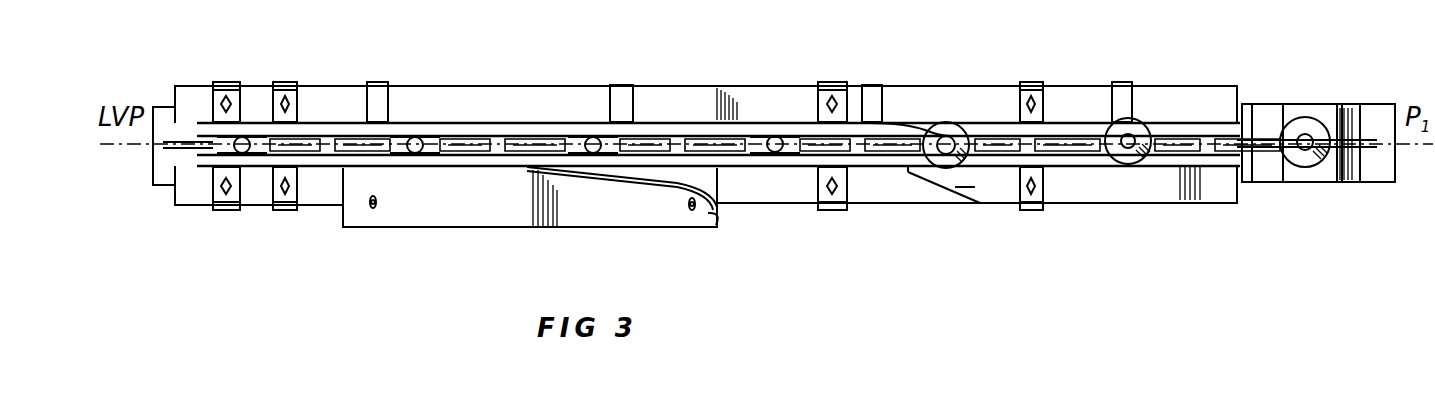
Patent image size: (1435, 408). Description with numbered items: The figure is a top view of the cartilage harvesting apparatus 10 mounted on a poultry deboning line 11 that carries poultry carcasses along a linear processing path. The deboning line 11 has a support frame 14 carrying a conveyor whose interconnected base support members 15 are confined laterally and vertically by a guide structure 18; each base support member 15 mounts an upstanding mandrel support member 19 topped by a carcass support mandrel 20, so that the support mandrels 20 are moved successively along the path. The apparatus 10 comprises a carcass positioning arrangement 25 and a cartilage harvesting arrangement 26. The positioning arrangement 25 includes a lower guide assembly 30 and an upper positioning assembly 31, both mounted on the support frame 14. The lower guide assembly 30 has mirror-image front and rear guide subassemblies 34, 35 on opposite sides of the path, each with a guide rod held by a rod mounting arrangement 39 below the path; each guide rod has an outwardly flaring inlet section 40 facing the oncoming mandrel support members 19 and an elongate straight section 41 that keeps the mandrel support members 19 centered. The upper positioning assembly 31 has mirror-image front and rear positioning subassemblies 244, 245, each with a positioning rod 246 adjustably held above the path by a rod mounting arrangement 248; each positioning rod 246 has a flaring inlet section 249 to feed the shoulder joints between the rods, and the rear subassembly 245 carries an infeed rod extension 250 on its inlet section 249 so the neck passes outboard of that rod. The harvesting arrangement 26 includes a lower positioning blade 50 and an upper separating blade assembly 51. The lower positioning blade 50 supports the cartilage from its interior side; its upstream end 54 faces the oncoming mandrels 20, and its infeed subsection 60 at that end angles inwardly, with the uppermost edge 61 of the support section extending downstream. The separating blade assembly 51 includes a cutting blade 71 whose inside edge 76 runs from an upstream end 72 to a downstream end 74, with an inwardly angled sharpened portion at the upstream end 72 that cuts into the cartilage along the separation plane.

The cartilage harvesting apparatus 10 is at (553, 228).
The poultry deboning line 11 is at (1287, 71).
The support frame 14 is at (1201, 213).
The base support members 15 is at (1270, 182).
The guide structure 18 is at (1230, 88).
The mandrel support member 19 is at (514, 212).
The carcass support mandrel 20 is at (400, 122).
The carcass positioning arrangement 25 is at (936, 124).
The cartilage harvesting arrangement 26 is at (391, 251).
The lower guide assembly 30 is at (1092, 110).
The upper positioning assembly 31 is at (474, 113).
The front guide subassembly 34 is at (1005, 200).
The rear guide subassembly 35 is at (1045, 115).
The rod mounting arrangement 39 is at (287, 92).
The inlet section 40 is at (1150, 125).
The straight section 41 is at (1012, 120).
The lower positioning blade 50 is at (945, 190).
The upper separating blade assembly 51 is at (378, 230).
The upstream end 54 is at (955, 195).
The infeed subsection 60 is at (965, 178).
The uppermost edge 61 is at (898, 180).
The cutting blade 71 is at (455, 226).
The upstream end 72 is at (712, 232).
The downstream end 74 is at (343, 222).
The inside edge 76 is at (668, 184).
The front positioning subassembly 244 is at (746, 180).
The rear positioning subassembly 245 is at (532, 115).
The positioning rod 246 is at (702, 122).
The rod mounting arrangement 248 is at (240, 66).
The inlet section 249 is at (912, 115).
The infeed rod extension 250 is at (922, 128).